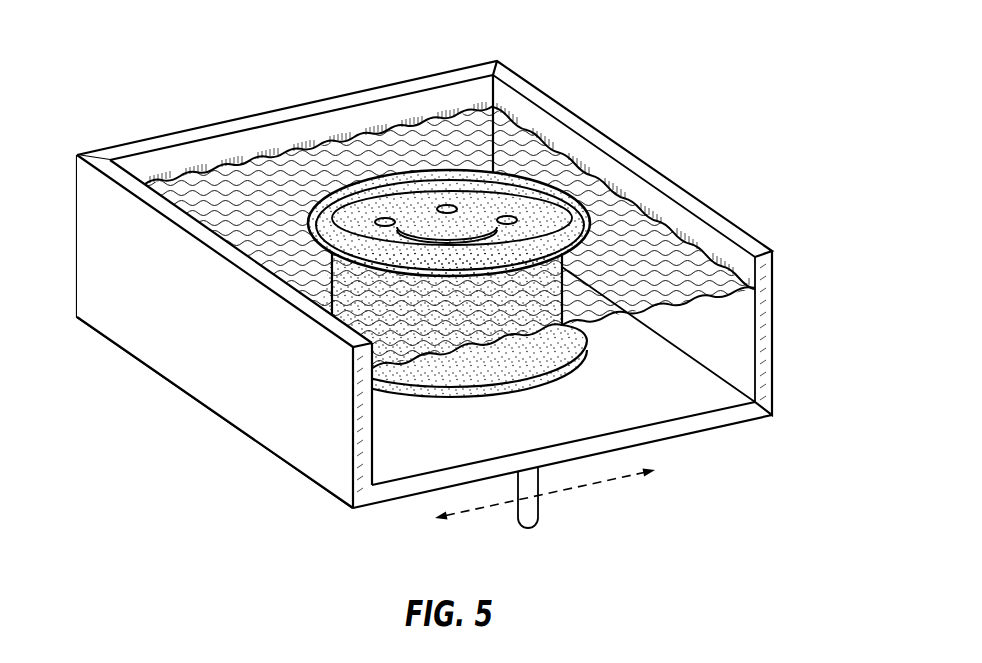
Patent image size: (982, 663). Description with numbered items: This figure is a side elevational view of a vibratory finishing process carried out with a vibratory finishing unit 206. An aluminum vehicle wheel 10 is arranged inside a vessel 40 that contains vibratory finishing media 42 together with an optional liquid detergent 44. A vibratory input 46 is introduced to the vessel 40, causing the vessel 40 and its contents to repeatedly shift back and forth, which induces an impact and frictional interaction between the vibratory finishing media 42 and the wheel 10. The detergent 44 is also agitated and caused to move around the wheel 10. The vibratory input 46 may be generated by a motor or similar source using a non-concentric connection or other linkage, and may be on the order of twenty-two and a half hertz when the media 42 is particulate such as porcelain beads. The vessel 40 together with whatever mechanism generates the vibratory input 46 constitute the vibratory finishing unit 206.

The vibratory finishing unit 206 is at (722, 52).
The aluminum vehicle wheel 10 is at (377, 173).
The vibratory finishing media 42 is at (688, 237).
The liquid detergent 44 is at (737, 323).
The vessel 40 is at (775, 357).
The vibratory input 46 is at (535, 515).